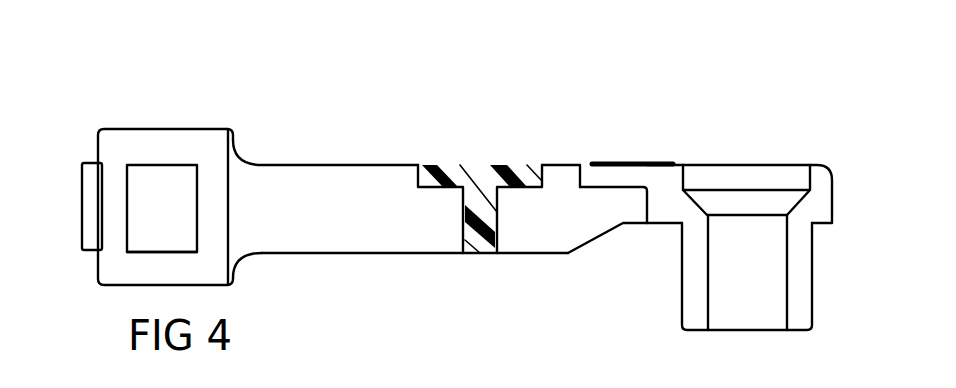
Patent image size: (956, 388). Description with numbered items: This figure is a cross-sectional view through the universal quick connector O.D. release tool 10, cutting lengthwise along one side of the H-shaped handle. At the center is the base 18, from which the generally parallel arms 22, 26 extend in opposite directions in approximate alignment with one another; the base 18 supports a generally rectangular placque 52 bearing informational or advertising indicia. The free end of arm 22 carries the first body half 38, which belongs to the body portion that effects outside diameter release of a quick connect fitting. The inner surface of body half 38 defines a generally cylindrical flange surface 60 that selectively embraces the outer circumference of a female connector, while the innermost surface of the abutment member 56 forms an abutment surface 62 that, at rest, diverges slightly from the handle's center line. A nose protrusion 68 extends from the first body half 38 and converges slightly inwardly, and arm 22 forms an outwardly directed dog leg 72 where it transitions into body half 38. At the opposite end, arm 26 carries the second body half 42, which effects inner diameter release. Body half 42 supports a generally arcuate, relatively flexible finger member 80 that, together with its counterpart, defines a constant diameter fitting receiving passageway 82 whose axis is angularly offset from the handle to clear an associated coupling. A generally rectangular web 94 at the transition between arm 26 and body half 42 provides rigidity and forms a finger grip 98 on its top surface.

The universal quick connector O.D. release tool 10 is at (376, 280).
The base 18 is at (465, 227).
The arm 22 is at (288, 175).
The arm 26 is at (560, 180).
The first body half 38 is at (122, 148).
The second body half 42 is at (820, 187).
The placque 52 is at (445, 168).
The abutment member 56 is at (142, 240).
The cylindrical flange surface 60 is at (213, 147).
The abutment surface 62 is at (165, 248).
The nose protrusion 68 is at (92, 210).
The dog leg 72 is at (273, 215).
The finger member 80 is at (797, 313).
The fitting receiving passageway 82 is at (757, 317).
The web 94 is at (602, 178).
The finger grip 98 is at (647, 162).